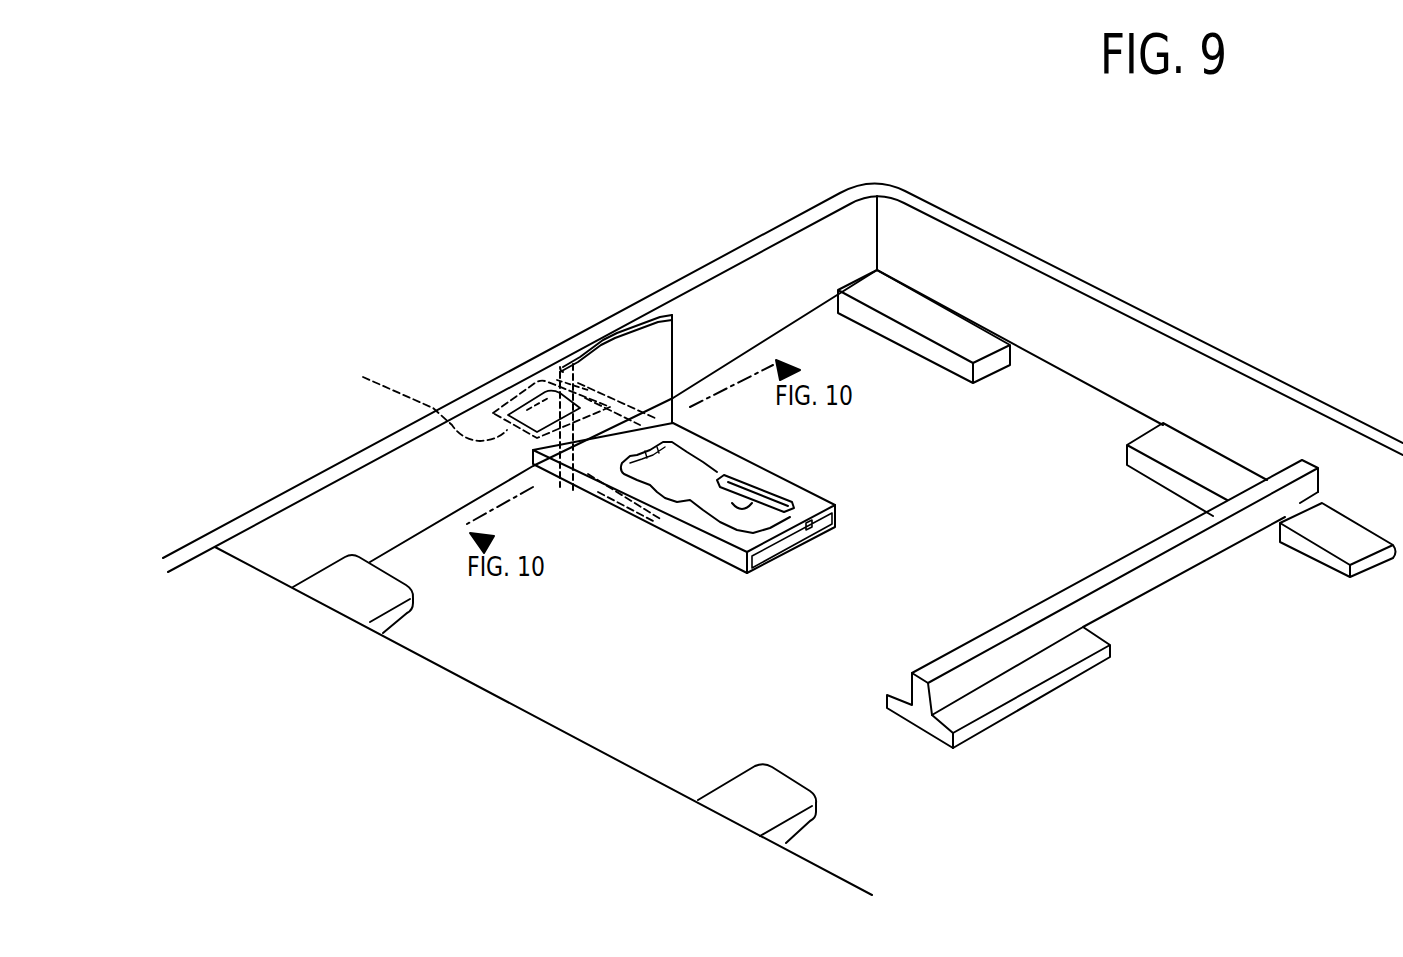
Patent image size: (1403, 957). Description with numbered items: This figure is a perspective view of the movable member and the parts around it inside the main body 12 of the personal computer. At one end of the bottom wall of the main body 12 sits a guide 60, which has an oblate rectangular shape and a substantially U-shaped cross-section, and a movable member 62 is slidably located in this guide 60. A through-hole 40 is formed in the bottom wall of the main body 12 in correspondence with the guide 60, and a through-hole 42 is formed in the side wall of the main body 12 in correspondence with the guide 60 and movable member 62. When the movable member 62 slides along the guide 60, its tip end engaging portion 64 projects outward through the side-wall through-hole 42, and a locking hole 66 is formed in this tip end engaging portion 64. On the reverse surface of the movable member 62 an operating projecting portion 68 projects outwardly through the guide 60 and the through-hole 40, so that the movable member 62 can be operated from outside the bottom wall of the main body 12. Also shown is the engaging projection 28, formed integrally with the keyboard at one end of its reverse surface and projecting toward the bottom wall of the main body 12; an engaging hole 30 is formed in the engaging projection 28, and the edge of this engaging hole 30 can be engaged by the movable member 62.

The main body 12 is at (1102, 295).
The engaging projection 28 is at (672, 345).
The engaging hole 30 is at (637, 428).
The through-hole 40 is at (770, 482).
The through-hole 42 is at (535, 468).
The guide 60 is at (790, 510).
The movable member 62 is at (670, 467).
The tip end engaging portion 64 is at (428, 393).
The locking hole 66 is at (537, 390).
The operating projecting portion 68 is at (707, 497).